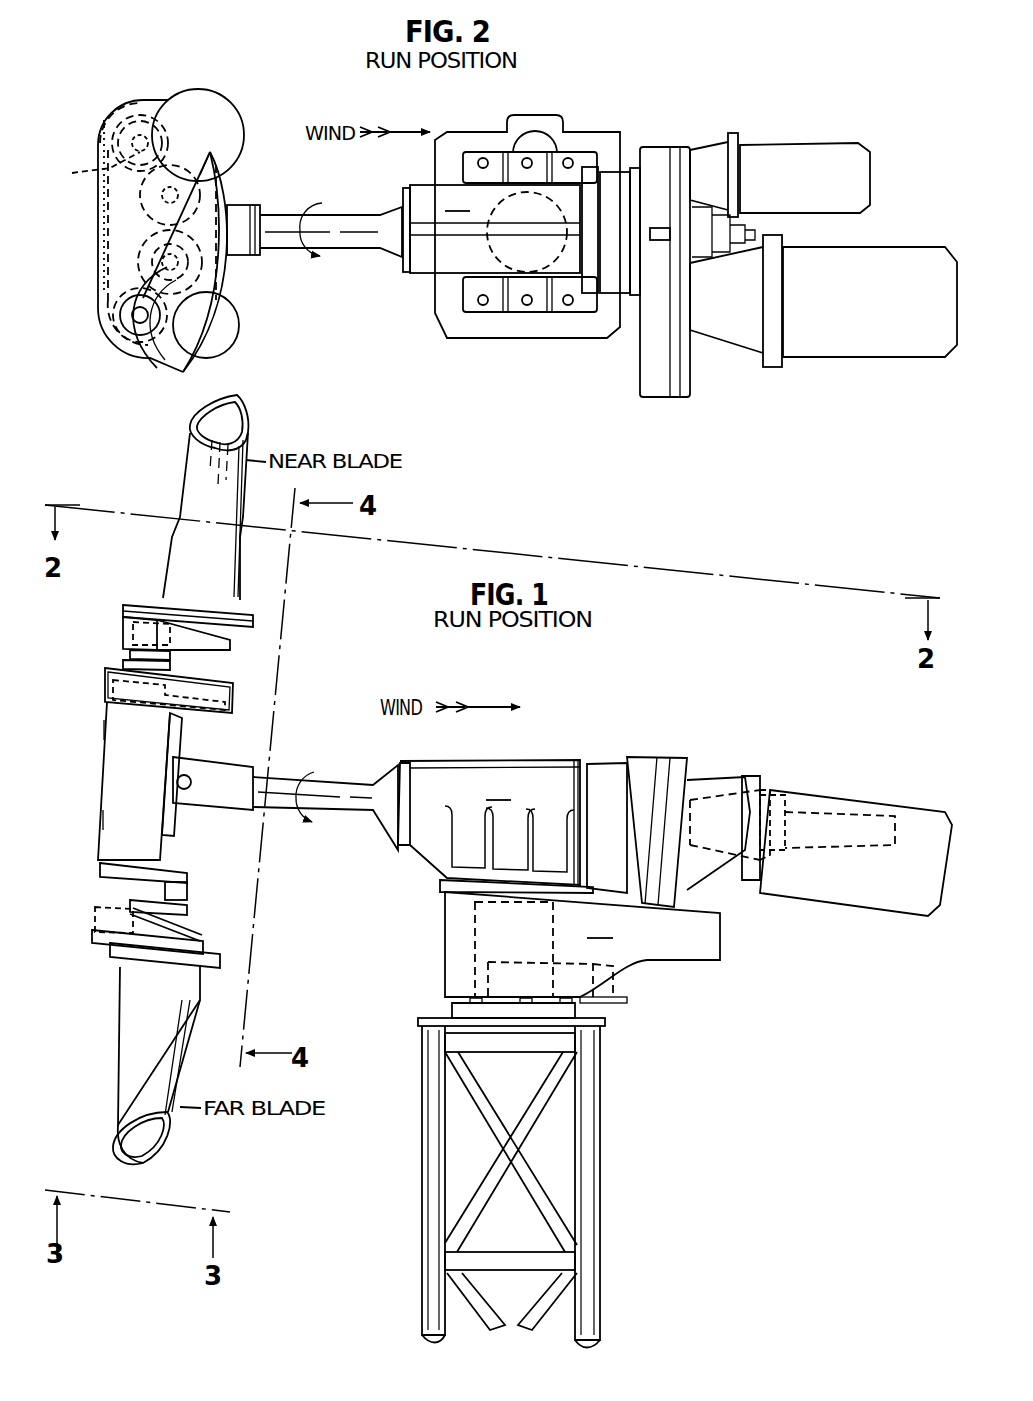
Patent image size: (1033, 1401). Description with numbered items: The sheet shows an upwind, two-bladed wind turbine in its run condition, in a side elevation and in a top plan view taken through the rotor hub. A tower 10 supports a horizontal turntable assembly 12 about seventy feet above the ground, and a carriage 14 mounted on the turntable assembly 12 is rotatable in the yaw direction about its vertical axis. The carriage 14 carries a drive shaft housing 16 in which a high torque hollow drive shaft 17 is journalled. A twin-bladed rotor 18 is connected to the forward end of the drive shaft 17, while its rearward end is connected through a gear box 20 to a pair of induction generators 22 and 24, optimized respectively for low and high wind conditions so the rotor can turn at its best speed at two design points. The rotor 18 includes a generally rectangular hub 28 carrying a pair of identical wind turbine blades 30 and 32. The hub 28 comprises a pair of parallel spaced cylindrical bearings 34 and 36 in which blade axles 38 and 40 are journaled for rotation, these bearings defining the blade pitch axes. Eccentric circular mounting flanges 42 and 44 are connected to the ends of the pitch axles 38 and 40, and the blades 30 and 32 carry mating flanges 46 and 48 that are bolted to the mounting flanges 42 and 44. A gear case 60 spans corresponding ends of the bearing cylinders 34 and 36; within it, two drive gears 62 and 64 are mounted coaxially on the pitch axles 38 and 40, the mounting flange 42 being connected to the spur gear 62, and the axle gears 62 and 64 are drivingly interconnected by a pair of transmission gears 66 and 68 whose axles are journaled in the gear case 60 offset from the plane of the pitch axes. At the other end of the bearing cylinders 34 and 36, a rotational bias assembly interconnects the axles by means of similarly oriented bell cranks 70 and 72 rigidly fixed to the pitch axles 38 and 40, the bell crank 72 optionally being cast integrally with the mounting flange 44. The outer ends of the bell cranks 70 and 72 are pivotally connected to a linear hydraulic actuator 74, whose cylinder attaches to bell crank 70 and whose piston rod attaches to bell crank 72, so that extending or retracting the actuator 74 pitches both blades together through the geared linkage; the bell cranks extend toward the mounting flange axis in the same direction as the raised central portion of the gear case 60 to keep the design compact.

In FIG. 1, the tower 10 is at (604, 1174).
In FIG. 2, the turntable assembly 12 is at (520, 340).
In FIG. 1, the turntable assembly 12 is at (452, 1011).
In FIG. 1, the carriage 14 is at (582, 947).
In FIG. 2, the drive shaft housing 16 is at (516, 230).
In FIG. 1, the drive shaft housing 16 is at (495, 826).
In FIG. 2, the drive shaft 17 is at (337, 220).
In FIG. 1, the drive shaft 17 is at (333, 790).
In FIG. 2, the twin-bladed rotor 18 is at (256, 288).
In FIG. 1, the twin-bladed rotor 18 is at (188, 852).
In FIG. 2, the gear box 20 is at (657, 380).
In FIG. 1, the gear box 20 is at (652, 790).
In FIG. 2, the induction generator 22 is at (823, 191).
In FIG. 1, the induction generator 22 is at (808, 792).
In FIG. 2, the induction generator 24 is at (886, 312).
In FIG. 1, the induction generator 24 is at (890, 798).
In FIG. 1, the hub 28 is at (108, 776).
In FIG. 2, the wind turbine blade 30 is at (224, 258).
In FIG. 1, the wind turbine blade 30 is at (186, 458).
In FIG. 1, the wind turbine blade 32 is at (118, 1088).
In FIG. 2, the cylindrical bearing 34 is at (97, 336).
In FIG. 1, the cylindrical bearing 34 is at (122, 798).
In FIG. 2, the cylindrical bearing 36 is at (97, 118).
In FIG. 2, the blade axle 38 is at (128, 316).
In FIG. 1, the blade axle 38 is at (125, 637).
In FIG. 2, the blade axle 40 is at (90, 168).
In FIG. 1, the blade axle 40 is at (95, 912).
In FIG. 2, the eccentric circular mounting flange 42 is at (214, 338).
In FIG. 1, the eccentric circular mounting flange 42 is at (254, 625).
In FIG. 2, the eccentric circular mounting flange 44 is at (197, 104).
In FIG. 1, the eccentric circular mounting flange 44 is at (222, 951).
In FIG. 1, the mating flange 46 is at (254, 616).
In FIG. 1, the mating flange 48 is at (222, 964).
In FIG. 2, the gear case 60 is at (112, 185).
In FIG. 1, the gear case 60 is at (105, 690).
In FIG. 2, the drive gear 62 is at (112, 306).
In FIG. 1, the drive gear 62 is at (105, 655).
In FIG. 2, the drive gear 64 is at (130, 145).
In FIG. 2, the transmission gear 66 is at (140, 200).
In FIG. 2, the transmission gear 68 is at (138, 254).
In FIG. 2, the bell crank 70 is at (198, 300).
In FIG. 1, the bell crank 70 is at (182, 909).
In FIG. 2, the bell crank 72 is at (202, 147).
In FIG. 1, the linear hydraulic actuator 74 is at (190, 893).